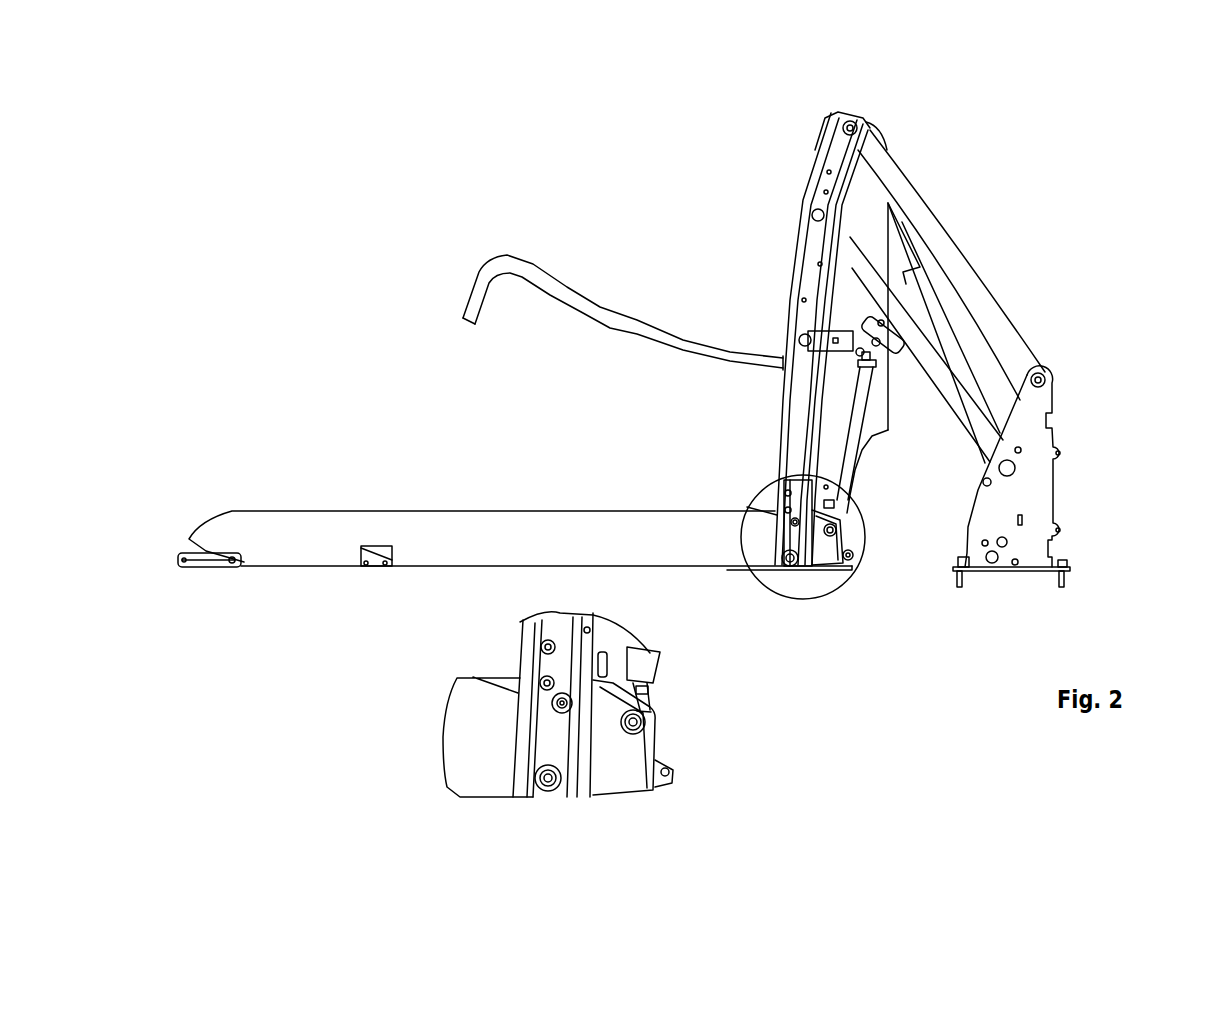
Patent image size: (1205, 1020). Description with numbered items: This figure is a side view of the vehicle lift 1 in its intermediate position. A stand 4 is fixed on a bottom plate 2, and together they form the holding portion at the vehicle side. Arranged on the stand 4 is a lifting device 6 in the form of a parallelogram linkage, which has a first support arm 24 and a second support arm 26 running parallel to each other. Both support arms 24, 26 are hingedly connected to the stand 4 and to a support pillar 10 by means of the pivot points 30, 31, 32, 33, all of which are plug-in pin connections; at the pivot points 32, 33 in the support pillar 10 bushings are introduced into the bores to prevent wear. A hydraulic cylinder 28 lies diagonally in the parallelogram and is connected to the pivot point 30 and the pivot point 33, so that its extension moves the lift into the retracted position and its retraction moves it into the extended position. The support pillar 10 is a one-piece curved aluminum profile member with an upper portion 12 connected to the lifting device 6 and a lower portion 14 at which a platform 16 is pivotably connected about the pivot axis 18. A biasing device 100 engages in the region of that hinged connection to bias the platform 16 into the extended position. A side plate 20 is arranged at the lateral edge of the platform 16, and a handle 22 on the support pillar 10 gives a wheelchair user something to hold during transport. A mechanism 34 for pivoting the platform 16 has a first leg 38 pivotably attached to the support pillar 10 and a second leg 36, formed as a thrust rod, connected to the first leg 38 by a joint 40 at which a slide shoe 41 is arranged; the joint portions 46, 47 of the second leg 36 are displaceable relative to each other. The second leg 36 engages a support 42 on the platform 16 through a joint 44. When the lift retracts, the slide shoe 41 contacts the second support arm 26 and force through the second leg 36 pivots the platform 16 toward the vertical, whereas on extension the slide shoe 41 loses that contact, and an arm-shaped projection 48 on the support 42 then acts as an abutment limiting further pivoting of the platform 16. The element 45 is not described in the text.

The vehicle lift 1 is at (208, 127).
The bottom plate 2 is at (1012, 584).
The stand 4 is at (1080, 469).
The lifting device 6 is at (1042, 173).
The support pillar 10 is at (771, 272).
The upper portion 12 is at (785, 143).
The lower portion 14 is at (738, 477).
The platform 16 is at (203, 459).
The pivot axis 18 is at (794, 572).
The side plate 20 is at (297, 542).
The handle 22 is at (530, 256).
The first support arm 24 is at (1015, 322).
The second support arm 26 is at (956, 411).
The hydraulic cylinder 28 is at (947, 306).
The pivot point 30 is at (998, 483).
The pivot point 31 is at (1047, 378).
The pivot point 32 is at (808, 209).
The pivot point 33 is at (853, 118).
The mechanism 34 is at (874, 474).
The second leg 36 is at (860, 438).
The first leg 38 is at (835, 325).
The joint 40 is at (884, 320).
The slide shoe 41 is at (885, 338).
The support 42 is at (831, 560).
The joint 44 is at (847, 564).
The screw 45 is at (795, 337).
The joint portion 46 is at (829, 500).
The joint portion 47 is at (856, 365).
The arm-shaped projection 48 is at (612, 653).
The biasing device 100 is at (752, 468).